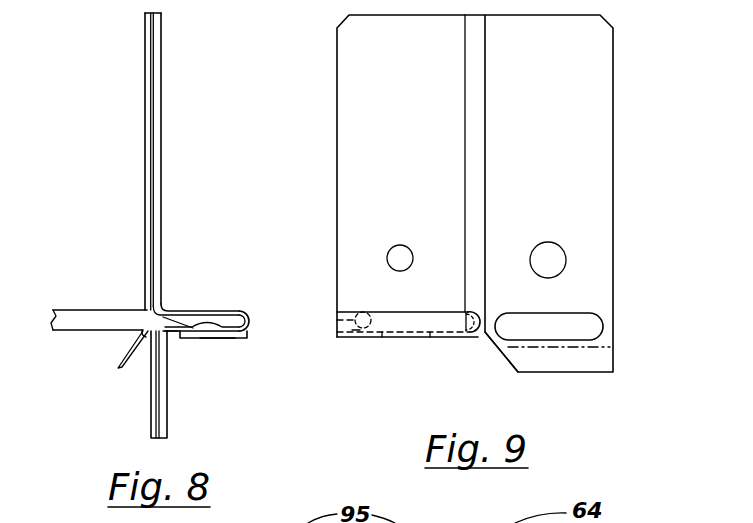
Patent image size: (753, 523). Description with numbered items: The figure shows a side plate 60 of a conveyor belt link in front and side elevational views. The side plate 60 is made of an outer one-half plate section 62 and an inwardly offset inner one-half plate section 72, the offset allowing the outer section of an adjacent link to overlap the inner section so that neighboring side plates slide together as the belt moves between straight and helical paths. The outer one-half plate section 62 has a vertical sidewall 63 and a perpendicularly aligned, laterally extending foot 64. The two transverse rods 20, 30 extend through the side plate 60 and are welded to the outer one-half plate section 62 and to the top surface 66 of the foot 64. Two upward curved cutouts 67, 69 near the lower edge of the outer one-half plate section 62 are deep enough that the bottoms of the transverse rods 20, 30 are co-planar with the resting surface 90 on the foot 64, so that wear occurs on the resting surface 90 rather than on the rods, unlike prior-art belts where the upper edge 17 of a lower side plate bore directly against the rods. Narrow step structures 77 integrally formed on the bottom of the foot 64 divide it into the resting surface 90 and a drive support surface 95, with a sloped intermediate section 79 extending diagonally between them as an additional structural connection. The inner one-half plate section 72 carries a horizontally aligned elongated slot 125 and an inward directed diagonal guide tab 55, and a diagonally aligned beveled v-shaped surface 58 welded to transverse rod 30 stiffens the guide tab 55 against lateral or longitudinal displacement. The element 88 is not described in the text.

In FIG. 8, the side plate 60 is at (140, 38).
In FIG. 9, the side plate 60 is at (330, 65).
In FIG. 9, the outer one-half plate section 62 is at (423, 109).
In FIG. 9, the inner one-half plate section 72 is at (560, 109).
In FIG. 8, the transverse rod 30 is at (78, 312).
In FIG. 9, the transverse rod 30 is at (482, 318).
In FIG. 8, the upper edge 17 is at (147, 313).
In FIG. 8, the top surface 66 is at (173, 313).
In FIG. 8, the foot 64 is at (201, 322).
In FIG. 8, the rounded end of hook 88 is at (246, 313).
In FIG. 8, the vertical sidewall 63 is at (252, 342).
In FIG. 8, the drive support surface 95 is at (228, 350).
In FIG. 8, the resting surface 90 is at (174, 350).
In FIG. 8, the beveled v-shaped surface 58 is at (138, 345).
In FIG. 9, the beveled v-shaped surface 58 is at (497, 362).
In FIG. 8, the guide tab 55 is at (112, 375).
In FIG. 9, the guide tab 55 is at (612, 359).
In FIG. 9, the transverse rod 20 is at (362, 313).
In FIG. 9, the upward curved cutout 67 is at (466, 313).
In FIG. 9, the upward curved cutout 69 is at (356, 333).
In FIG. 9, the step structure 77 is at (372, 338).
In FIG. 9, the sloped intermediate section 79 is at (408, 337).
In FIG. 9, the elongated slot 125 is at (560, 324).